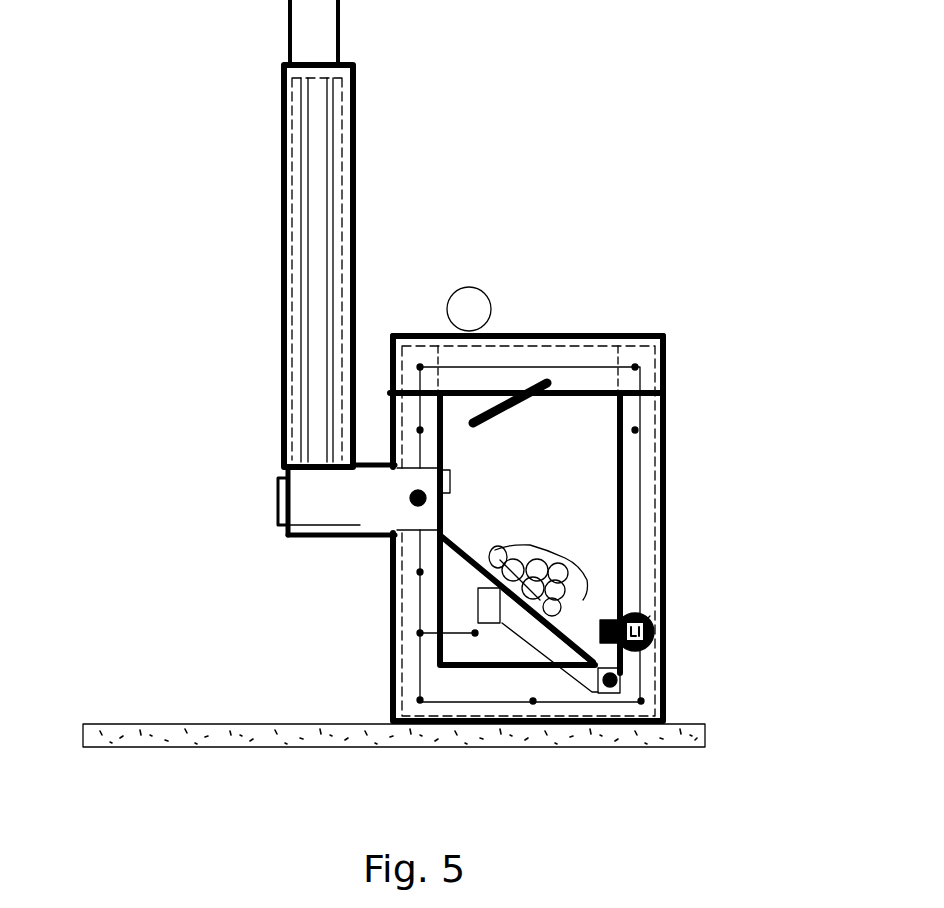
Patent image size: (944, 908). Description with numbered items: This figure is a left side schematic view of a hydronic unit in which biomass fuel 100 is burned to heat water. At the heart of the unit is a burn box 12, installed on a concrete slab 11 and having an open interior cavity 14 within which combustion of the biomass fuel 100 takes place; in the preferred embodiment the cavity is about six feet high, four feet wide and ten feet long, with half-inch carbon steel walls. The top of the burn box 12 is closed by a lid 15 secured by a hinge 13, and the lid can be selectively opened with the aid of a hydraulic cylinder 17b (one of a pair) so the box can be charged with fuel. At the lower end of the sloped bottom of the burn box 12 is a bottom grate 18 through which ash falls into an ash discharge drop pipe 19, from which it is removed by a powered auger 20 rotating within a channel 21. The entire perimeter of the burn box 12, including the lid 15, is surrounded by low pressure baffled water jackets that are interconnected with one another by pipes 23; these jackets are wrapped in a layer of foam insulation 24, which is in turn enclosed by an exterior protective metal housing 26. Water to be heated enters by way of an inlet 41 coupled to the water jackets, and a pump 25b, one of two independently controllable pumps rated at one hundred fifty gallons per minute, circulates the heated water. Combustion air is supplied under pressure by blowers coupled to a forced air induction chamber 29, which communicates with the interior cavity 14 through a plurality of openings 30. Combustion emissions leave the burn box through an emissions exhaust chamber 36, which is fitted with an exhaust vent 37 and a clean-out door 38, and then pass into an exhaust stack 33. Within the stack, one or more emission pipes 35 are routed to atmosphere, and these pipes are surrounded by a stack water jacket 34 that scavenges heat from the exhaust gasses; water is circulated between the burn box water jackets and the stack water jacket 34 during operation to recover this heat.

The concrete slab 11 is at (84, 737).
The burn box 12 is at (445, 447).
The hinge 13 is at (382, 392).
The interior cavity 14 is at (540, 535).
The lid 15 is at (590, 337).
The hydraulic cylinder 17b is at (508, 412).
The bottom grate 18 is at (620, 673).
The ash discharge drop pipe 19 is at (478, 606).
The powered auger 20 is at (617, 678).
The channel 21 is at (620, 682).
The pipes 23 is at (528, 367).
The foam insulation 24 is at (395, 655).
The pump 25b is at (473, 310).
The exterior protective metal housing 26 is at (540, 335).
The forced air induction chamber 29 is at (648, 618).
The openings 30 is at (633, 613).
The exhaust stack 33 is at (342, 18).
The stack water jacket 34 is at (292, 148).
The emission pipes 35 is at (333, 104).
The emissions exhaust chamber 36 is at (358, 527).
The exhaust vent 37 is at (452, 481).
The clean-out door 38 is at (280, 501).
The inlet 41 is at (410, 496).
The biomass fuel 100 is at (558, 548).